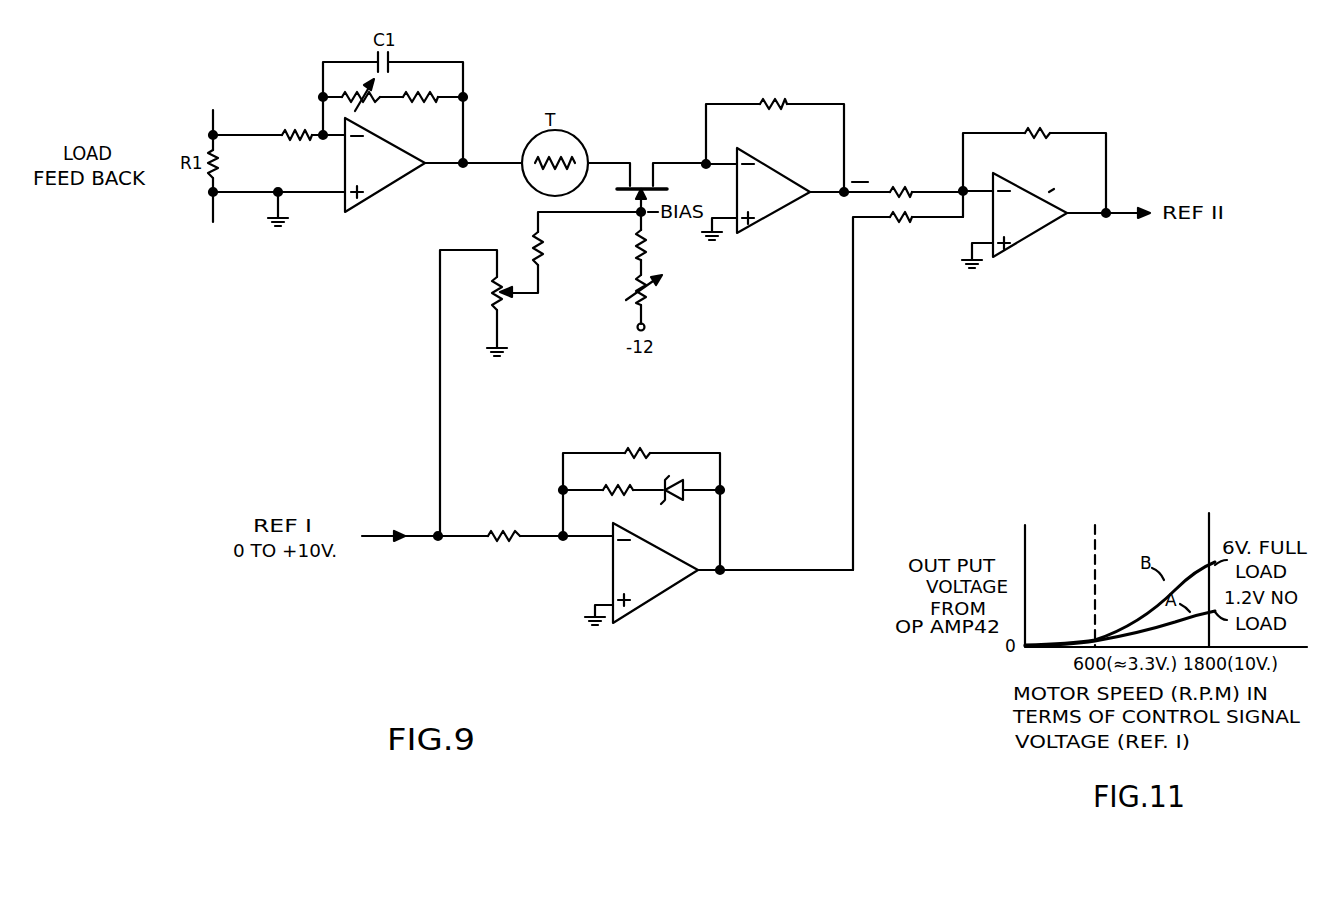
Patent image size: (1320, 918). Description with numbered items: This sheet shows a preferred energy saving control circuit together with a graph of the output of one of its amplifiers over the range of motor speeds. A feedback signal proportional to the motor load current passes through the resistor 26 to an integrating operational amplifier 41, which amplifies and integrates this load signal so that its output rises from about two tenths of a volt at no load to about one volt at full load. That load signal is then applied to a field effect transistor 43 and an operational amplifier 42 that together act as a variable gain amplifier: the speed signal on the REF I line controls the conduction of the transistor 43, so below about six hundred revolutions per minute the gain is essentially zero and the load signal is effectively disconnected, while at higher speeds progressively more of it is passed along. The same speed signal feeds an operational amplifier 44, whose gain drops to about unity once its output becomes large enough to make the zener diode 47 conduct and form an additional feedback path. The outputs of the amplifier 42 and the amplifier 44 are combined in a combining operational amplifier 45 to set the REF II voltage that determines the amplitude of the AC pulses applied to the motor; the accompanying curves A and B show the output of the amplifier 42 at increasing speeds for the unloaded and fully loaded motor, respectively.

The resistor 26 is at (218, 163).
The integrating operational amplifier 41 is at (395, 181).
The operational amplifier 42 is at (775, 214).
The field effect transistor 43 is at (640, 174).
The operational amplifier 44 is at (660, 597).
The combining operational amplifier 45 is at (1033, 237).
The zener diode 47 is at (671, 499).